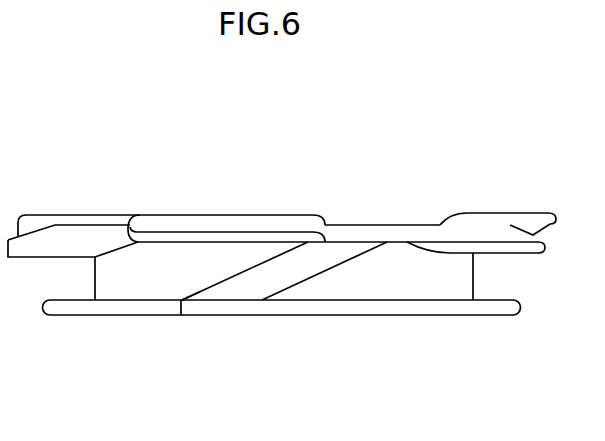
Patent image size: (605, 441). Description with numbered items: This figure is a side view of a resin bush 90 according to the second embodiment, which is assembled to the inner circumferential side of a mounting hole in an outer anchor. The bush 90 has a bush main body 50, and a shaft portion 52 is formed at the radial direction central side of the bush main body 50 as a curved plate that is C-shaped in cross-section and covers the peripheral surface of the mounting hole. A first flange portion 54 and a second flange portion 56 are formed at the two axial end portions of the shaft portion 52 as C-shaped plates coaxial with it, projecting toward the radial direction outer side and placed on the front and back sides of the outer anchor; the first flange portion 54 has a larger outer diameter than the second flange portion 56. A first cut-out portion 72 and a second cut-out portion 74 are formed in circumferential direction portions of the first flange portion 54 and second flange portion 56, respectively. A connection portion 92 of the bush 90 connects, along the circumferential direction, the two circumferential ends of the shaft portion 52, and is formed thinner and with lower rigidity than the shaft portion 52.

The bush 90 is at (83, 211).
The connection portion 92 is at (268, 280).
The first cut-out portion 72 is at (386, 230).
The second cut-out portion 74 is at (182, 306).
The bush main body 50 is at (470, 222).
The first flange portion 54 is at (517, 213).
The shaft portion 52 is at (442, 285).
The second flange portion 56 is at (502, 310).